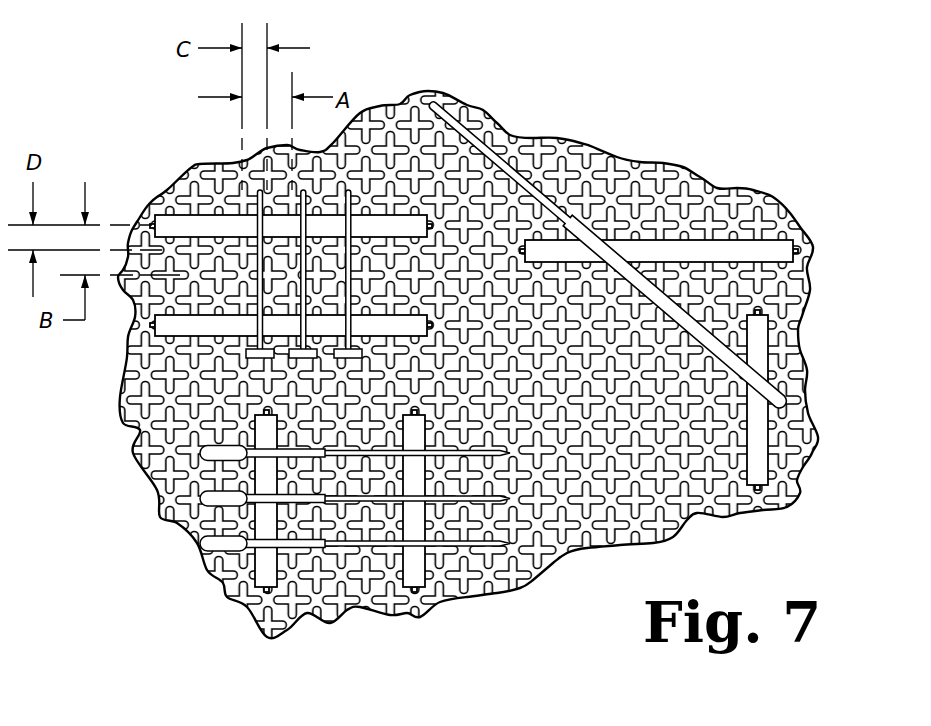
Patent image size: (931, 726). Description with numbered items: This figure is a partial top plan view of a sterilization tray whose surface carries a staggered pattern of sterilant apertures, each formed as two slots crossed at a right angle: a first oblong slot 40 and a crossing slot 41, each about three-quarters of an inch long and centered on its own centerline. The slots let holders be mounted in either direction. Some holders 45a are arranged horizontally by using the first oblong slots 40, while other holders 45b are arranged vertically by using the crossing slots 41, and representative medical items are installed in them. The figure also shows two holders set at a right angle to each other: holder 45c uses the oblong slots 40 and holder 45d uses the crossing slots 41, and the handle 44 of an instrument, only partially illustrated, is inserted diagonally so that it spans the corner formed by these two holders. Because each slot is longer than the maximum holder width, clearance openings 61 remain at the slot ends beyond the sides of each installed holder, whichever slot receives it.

The first oblong slot 40 is at (434, 364).
The crossing slot 41 is at (152, 413).
The handle 44 is at (580, 220).
The holder 45a is at (368, 222).
The holder 45b is at (260, 578).
The holder 45c is at (778, 243).
The holder 45d is at (763, 332).
The opening 61 is at (218, 210).